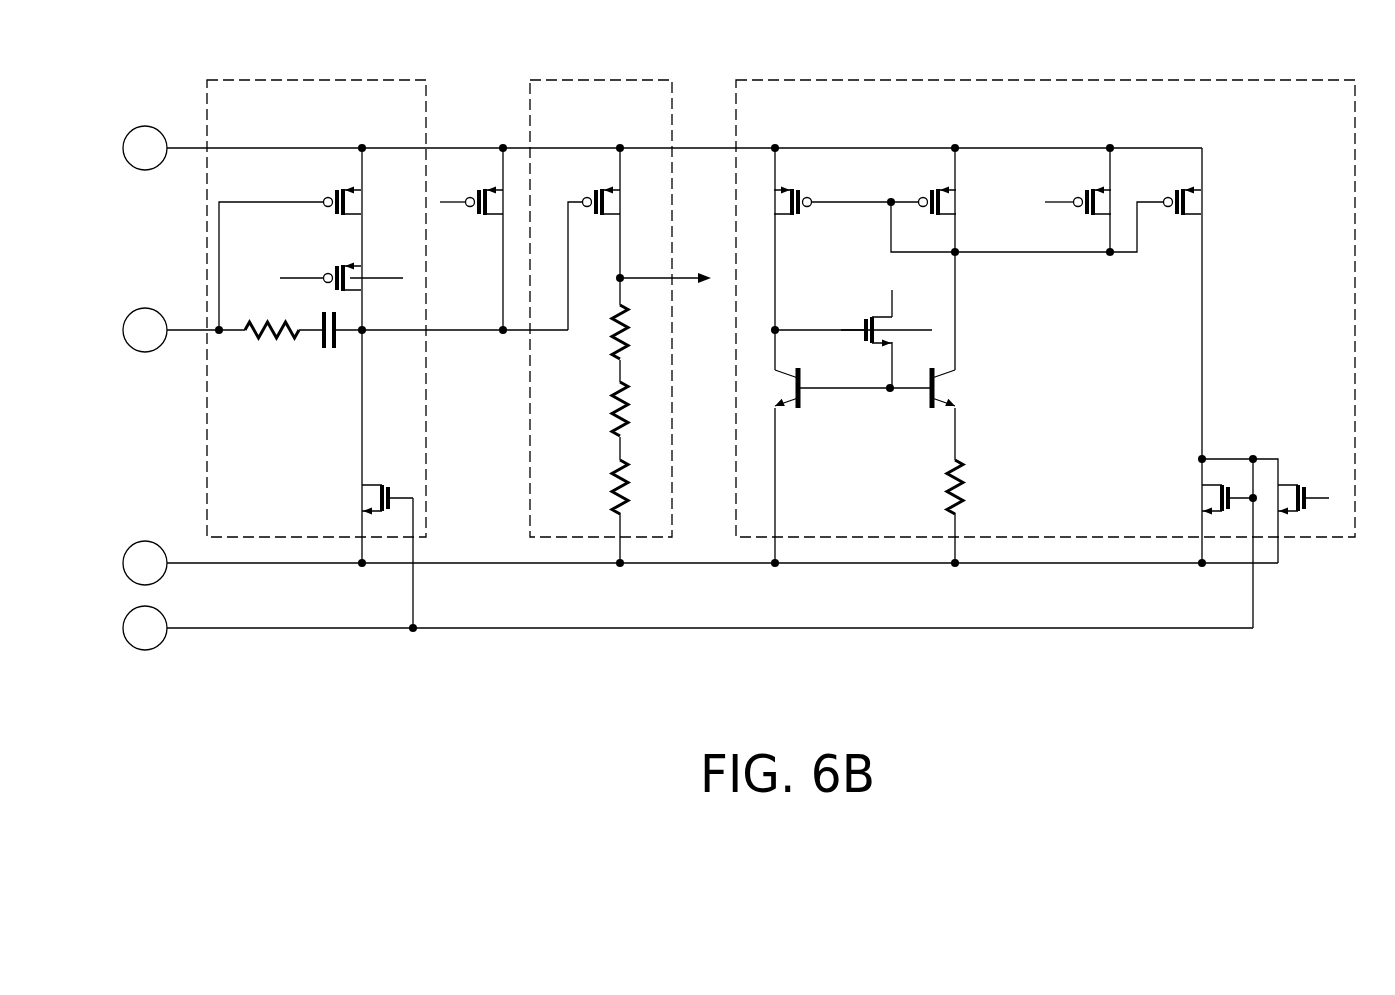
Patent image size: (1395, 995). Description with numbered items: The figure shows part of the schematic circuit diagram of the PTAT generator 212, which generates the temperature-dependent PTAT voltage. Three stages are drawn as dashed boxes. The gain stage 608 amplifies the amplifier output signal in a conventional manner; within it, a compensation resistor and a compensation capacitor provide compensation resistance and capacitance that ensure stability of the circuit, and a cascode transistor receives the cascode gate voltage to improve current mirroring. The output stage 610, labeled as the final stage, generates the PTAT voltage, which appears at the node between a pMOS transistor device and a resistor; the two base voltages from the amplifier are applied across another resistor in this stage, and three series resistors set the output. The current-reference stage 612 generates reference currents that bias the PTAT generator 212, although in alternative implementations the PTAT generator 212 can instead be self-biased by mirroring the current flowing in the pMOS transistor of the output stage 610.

The PTAT generator 212 is at (984, 772).
The gain stage 608 is at (395, 80).
The output stage 610 is at (645, 80).
The current-reference stage 612 is at (1180, 80).